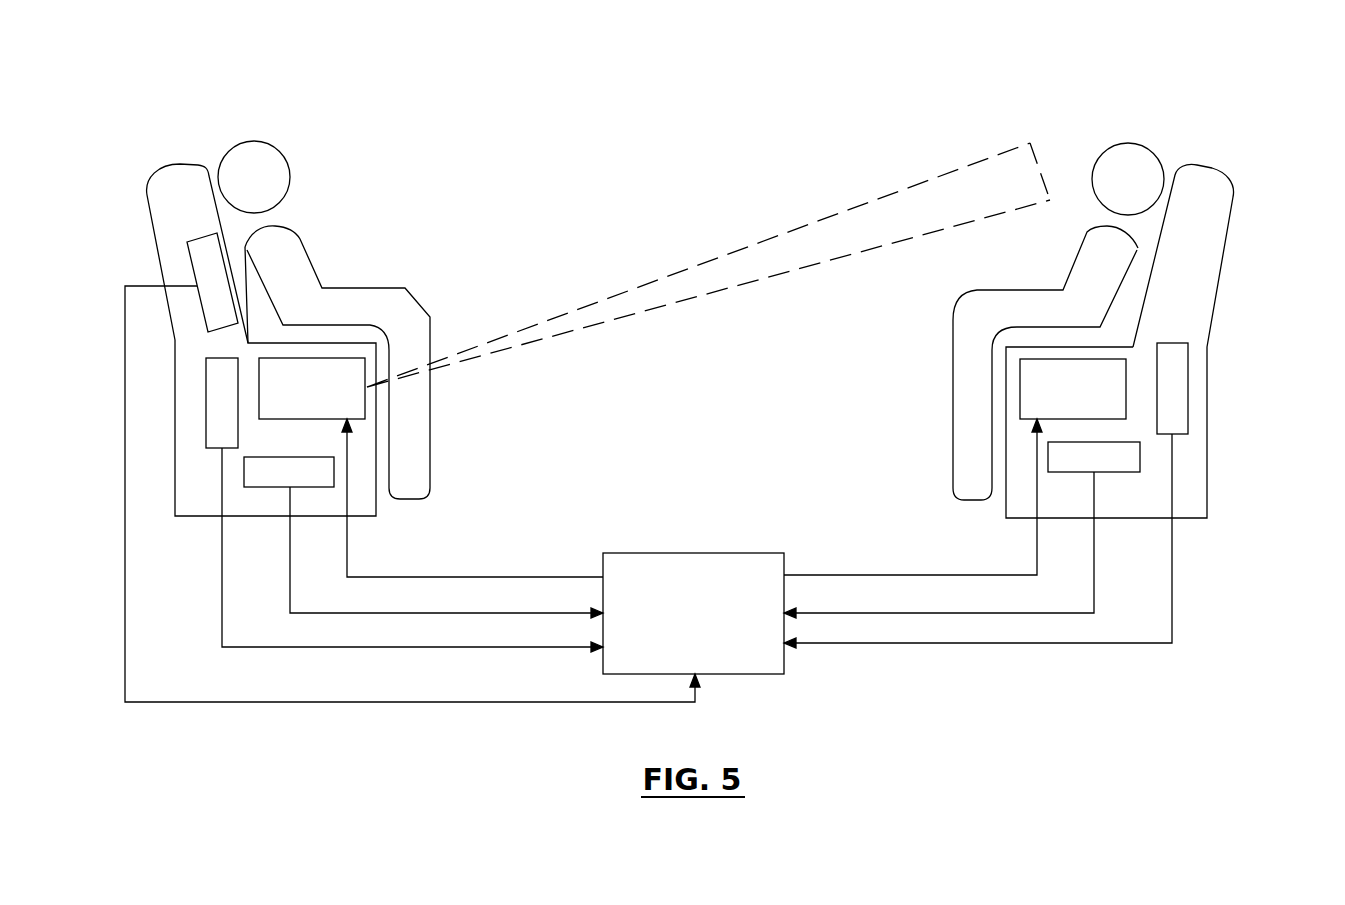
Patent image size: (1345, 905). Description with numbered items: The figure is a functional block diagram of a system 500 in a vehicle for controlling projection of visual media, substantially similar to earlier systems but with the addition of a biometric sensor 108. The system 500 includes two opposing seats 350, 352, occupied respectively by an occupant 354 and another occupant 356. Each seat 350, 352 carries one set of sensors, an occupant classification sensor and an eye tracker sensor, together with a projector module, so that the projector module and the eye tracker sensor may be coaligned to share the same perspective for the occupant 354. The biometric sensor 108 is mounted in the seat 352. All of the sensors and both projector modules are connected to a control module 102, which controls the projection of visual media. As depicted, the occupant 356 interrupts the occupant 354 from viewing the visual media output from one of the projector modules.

The system 500 is at (226, 73).
The control module 102 is at (705, 553).
The biometric sensor 108 is at (190, 255).
The seat 350 is at (1223, 267).
The seat 352 is at (153, 226).
The occupant 354 is at (953, 373).
The occupant 356 is at (305, 245).